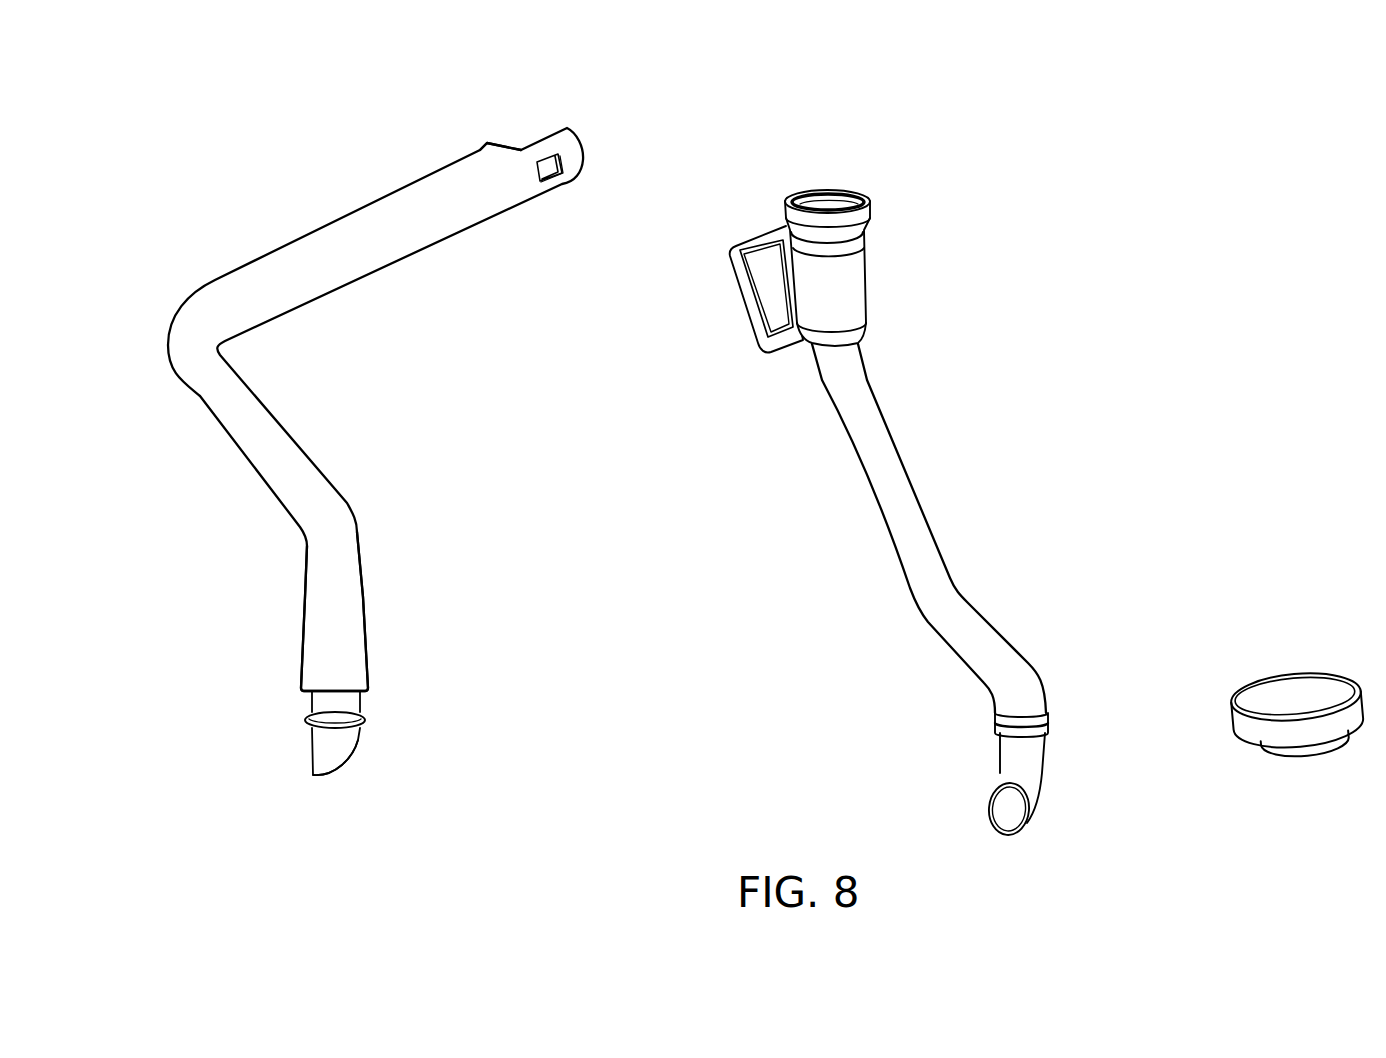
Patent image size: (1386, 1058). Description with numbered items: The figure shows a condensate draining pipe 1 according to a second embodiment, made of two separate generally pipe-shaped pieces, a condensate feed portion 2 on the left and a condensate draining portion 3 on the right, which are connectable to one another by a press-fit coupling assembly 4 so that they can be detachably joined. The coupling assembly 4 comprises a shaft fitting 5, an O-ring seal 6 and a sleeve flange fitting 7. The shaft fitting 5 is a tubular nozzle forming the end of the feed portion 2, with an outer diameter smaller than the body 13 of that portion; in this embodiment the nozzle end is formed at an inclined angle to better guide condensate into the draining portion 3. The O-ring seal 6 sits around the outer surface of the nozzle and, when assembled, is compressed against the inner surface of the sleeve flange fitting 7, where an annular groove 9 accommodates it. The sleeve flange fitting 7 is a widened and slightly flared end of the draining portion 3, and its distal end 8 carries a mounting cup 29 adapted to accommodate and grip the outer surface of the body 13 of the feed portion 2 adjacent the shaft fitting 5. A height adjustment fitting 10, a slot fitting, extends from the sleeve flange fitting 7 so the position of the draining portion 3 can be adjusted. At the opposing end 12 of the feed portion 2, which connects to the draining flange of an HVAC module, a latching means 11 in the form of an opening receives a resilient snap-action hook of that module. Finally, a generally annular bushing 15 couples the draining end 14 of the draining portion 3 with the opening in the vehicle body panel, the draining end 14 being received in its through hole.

The condensate draining pipe 1 is at (1314, 117).
The condensate feed portion 2 is at (278, 264).
The condensate draining portion 3 is at (925, 538).
The coupling assembly 4 is at (303, 811).
The shaft fitting 5 is at (355, 737).
The O-ring seal 6 is at (364, 715).
The sleeve flange fitting 7 is at (861, 277).
The distal end 8 is at (837, 208).
The annular groove 9 is at (861, 225).
The height adjustment fitting 10 is at (757, 250).
The latching means 11 is at (548, 170).
The opposing end 12 is at (481, 155).
The body 13 is at (308, 670).
The draining end 14 is at (1040, 748).
The bushing 15 is at (1283, 689).
The mounting cup 29 is at (797, 193).